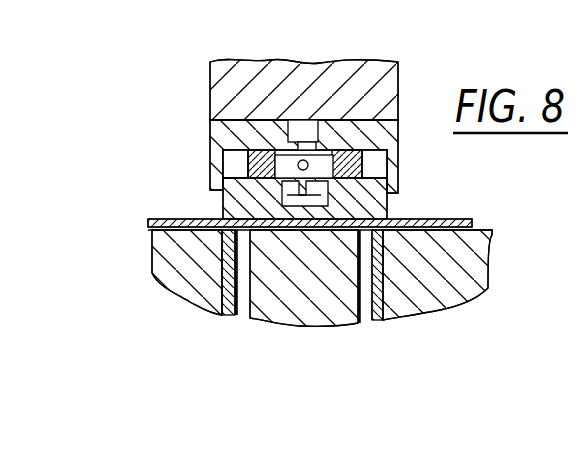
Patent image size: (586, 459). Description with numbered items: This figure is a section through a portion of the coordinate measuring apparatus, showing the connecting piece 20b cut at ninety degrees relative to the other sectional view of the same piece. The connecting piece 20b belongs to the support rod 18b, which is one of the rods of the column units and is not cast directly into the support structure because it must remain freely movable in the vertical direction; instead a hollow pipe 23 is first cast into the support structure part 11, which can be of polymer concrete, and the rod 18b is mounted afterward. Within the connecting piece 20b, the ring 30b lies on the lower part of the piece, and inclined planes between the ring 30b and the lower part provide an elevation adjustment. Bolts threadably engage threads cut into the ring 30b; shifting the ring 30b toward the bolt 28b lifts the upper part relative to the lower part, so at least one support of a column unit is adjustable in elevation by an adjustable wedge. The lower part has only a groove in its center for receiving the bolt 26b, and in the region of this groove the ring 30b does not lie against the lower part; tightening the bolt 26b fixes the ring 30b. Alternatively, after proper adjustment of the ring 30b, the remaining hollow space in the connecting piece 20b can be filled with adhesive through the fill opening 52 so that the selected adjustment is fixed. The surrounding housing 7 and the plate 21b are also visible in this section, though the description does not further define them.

The housing body 7 is at (392, 88).
The fill opening 52 is at (306, 133).
The ring 30b is at (212, 165).
The connecting piece 20b is at (200, 198).
The bolt 28b is at (307, 164).
The bolt 26b is at (329, 198).
The cover plate 21b is at (473, 222).
The support structure part 11 is at (465, 287).
The support rod 18b is at (276, 290).
The hollow pipe 23 is at (222, 248).